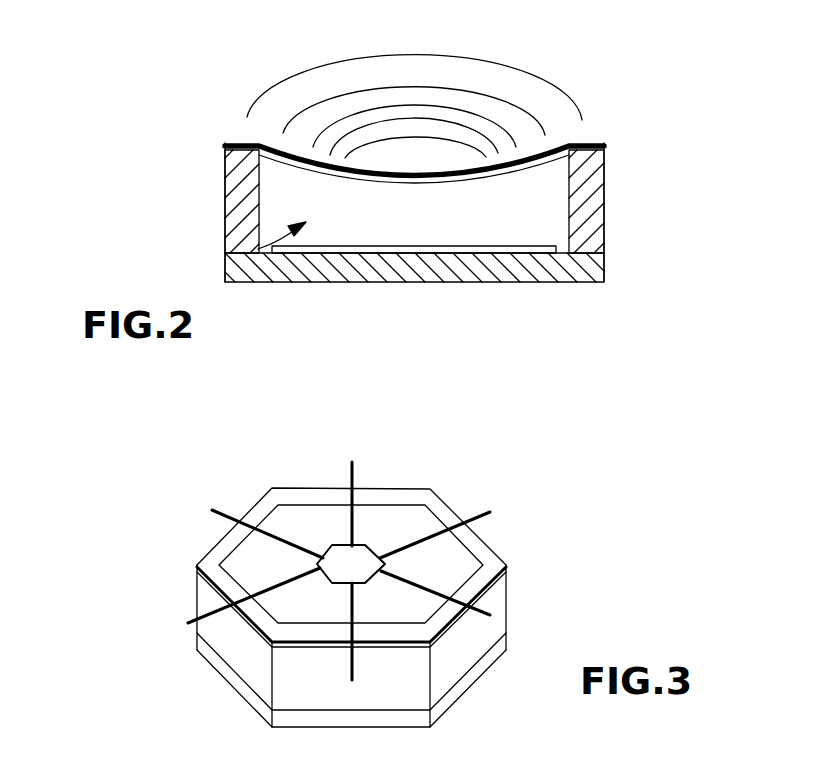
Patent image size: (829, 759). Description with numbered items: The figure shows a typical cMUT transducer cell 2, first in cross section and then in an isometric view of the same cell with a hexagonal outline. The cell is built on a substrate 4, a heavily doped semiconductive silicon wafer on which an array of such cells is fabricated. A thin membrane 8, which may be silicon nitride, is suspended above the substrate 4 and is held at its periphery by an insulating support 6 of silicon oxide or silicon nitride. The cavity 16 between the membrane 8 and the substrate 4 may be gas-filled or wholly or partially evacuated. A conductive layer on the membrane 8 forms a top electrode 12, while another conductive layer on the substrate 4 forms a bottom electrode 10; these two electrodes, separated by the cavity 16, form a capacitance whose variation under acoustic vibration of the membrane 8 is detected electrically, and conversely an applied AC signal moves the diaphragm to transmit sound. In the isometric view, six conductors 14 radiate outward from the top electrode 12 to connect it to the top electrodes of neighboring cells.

In FIG. 2, the cMUT transducer cell 2 is at (205, 58).
In FIG. 2, the substrate 4 is at (340, 268).
In FIG. 3, the substrate 4 is at (468, 682).
In FIG. 2, the insulating support 6 is at (225, 203).
In FIG. 3, the insulating support 6 is at (507, 603).
In FIG. 2, the membrane 8 is at (298, 167).
In FIG. 3, the membrane 8 is at (383, 518).
In FIG. 2, the electrode 10 is at (499, 253).
In FIG. 2, the electrode 12 is at (413, 173).
In FIG. 3, the electrode 12 is at (365, 582).
In FIG. 3, the conductors 14 is at (473, 512).
In FIG. 2, the cavity 16 is at (262, 247).